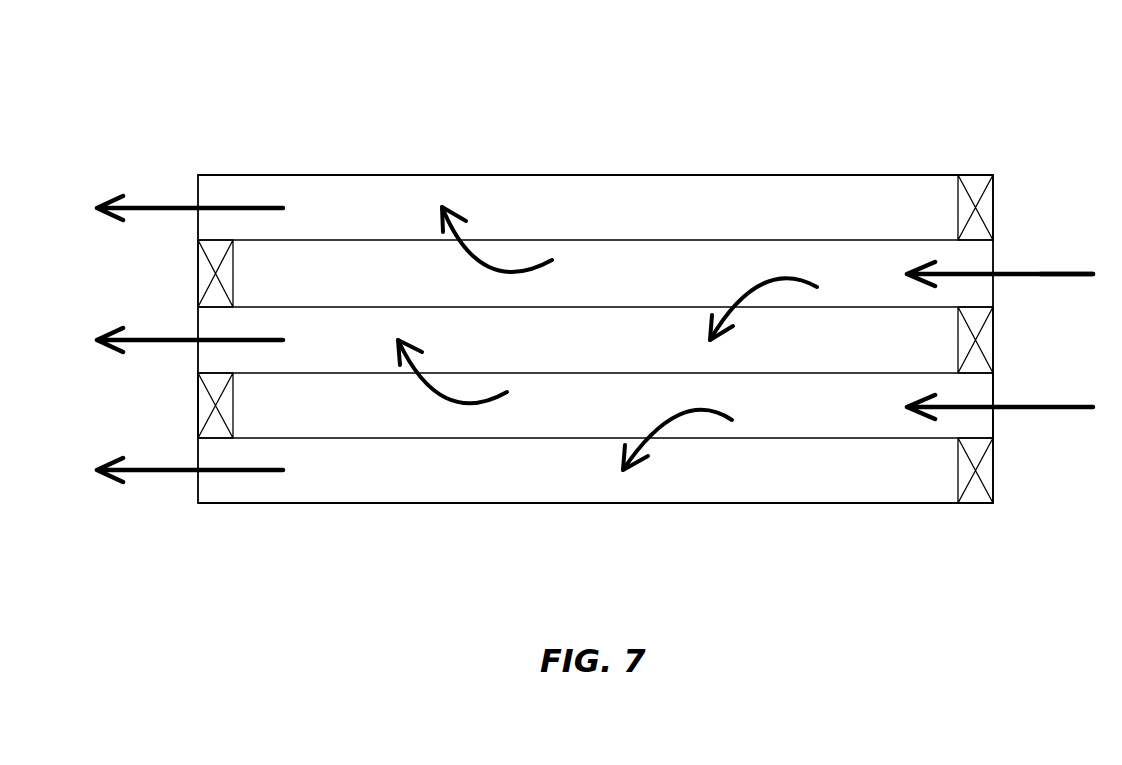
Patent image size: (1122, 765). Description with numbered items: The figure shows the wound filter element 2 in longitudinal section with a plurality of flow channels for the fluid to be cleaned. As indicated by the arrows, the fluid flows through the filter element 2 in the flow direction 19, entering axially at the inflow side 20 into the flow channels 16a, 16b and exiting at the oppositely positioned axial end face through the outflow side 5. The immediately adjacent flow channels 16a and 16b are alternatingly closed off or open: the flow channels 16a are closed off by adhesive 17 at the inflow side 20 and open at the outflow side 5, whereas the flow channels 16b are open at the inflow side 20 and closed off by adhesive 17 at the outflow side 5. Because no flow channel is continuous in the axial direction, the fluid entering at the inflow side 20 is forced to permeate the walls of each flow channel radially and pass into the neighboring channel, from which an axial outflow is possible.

The filter element 2 is at (222, 133).
The outflow side 5 is at (198, 379).
The flow channels 16a is at (712, 226).
The flow channels 16b is at (666, 294).
The adhesive 17 is at (205, 273).
The flow direction 19 is at (1035, 272).
The inflow side 20 is at (999, 436).